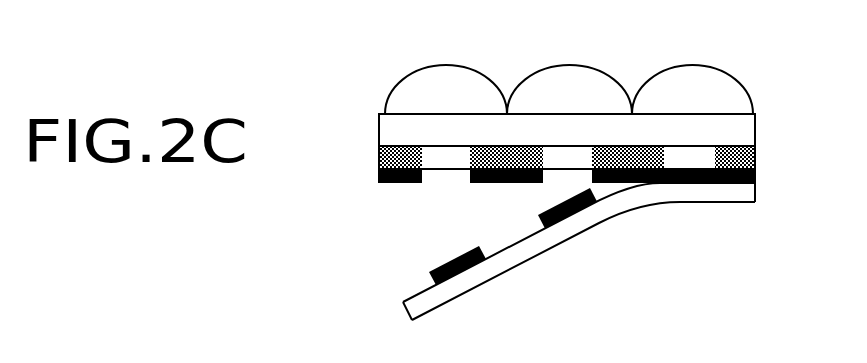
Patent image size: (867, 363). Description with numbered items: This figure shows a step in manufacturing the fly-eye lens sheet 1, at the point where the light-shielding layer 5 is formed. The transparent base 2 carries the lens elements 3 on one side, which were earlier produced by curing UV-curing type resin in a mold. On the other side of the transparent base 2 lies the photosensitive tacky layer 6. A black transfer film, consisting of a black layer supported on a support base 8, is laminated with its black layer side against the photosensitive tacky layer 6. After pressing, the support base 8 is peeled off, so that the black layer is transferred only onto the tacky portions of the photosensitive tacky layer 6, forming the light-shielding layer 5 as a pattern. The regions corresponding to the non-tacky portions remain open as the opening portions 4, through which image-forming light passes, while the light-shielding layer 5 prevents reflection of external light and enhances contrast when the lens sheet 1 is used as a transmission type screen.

The fly-eye lens sheet 1 is at (336, 77).
The transparent base 2 is at (752, 130).
The lens element 3 is at (715, 78).
The opening portion 4 is at (423, 172).
The light-shielding layer 5 is at (377, 178).
The photosensitive tacky layer 6 is at (755, 157).
The support base 8 is at (597, 224).